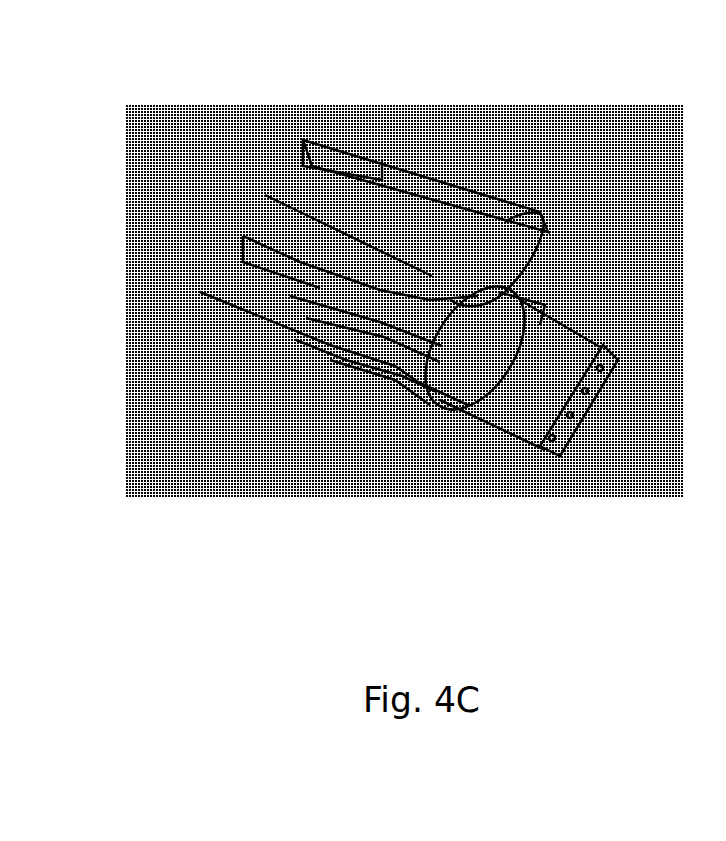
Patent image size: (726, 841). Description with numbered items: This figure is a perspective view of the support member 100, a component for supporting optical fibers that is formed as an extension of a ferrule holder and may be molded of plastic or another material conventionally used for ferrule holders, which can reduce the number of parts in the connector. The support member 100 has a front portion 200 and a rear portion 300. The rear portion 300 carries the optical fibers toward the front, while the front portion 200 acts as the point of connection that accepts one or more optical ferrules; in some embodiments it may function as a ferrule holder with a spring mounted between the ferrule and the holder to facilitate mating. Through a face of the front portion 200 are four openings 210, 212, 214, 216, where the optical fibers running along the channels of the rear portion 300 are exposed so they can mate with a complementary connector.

The support member 100 is at (404, 325).
The front portion 200 is at (538, 405).
The opening 210 is at (607, 368).
The opening 212 is at (590, 391).
The opening 214 is at (571, 418).
The opening 216 is at (553, 441).
The rear portion 300 is at (242, 168).